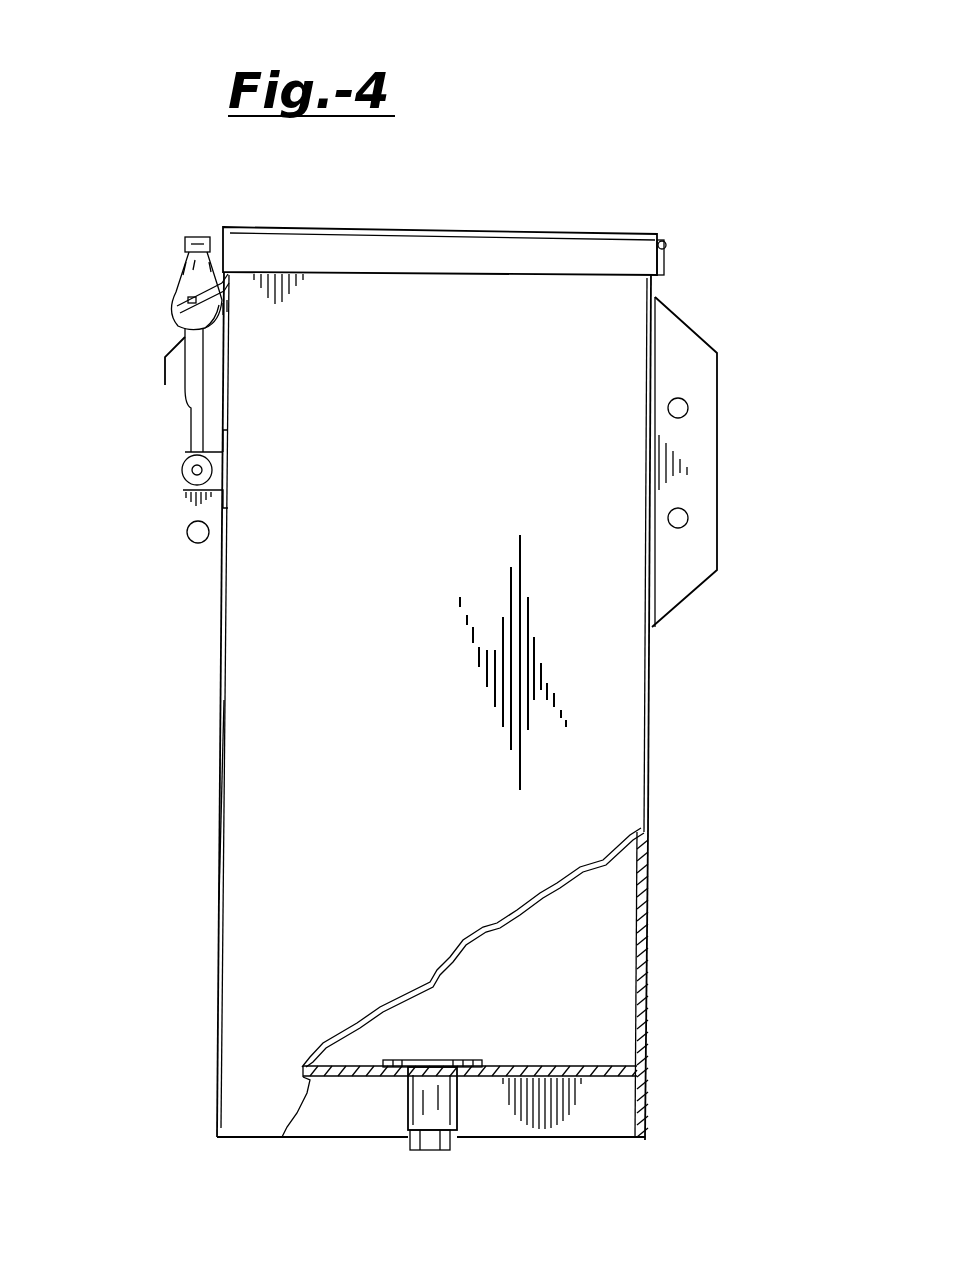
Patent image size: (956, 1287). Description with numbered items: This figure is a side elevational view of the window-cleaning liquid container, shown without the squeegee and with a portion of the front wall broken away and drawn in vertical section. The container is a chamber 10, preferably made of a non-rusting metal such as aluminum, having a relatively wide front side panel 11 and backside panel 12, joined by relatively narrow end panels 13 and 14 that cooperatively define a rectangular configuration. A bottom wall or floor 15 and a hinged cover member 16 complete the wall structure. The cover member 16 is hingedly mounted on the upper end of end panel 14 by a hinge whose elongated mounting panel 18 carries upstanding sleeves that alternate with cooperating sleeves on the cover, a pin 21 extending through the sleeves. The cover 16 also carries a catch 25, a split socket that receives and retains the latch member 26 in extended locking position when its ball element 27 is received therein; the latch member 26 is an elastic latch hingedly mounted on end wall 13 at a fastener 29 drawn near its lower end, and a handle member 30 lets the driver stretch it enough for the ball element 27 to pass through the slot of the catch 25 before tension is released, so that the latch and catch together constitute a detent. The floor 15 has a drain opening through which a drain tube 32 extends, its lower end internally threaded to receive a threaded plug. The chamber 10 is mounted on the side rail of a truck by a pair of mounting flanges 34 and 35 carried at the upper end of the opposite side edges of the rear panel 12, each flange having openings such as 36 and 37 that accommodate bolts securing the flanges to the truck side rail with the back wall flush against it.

The chamber 10 is at (537, 200).
The front side panel 11 is at (445, 860).
The backside panel 12 is at (500, 985).
The end panel 13 is at (222, 790).
The end panel 14 is at (652, 770).
The bottom wall or floor 15 is at (537, 1066).
The hinged cover member 16 is at (450, 228).
The mounting panel 18 is at (665, 270).
The pin 21 is at (667, 241).
The catch 25 is at (212, 312).
The latch member 26 is at (160, 392).
The ball element 27 is at (178, 292).
The fastener 29 is at (196, 470).
The handle member 30 is at (193, 237).
The drain tube 32 is at (396, 1060).
The mounting flange 34 is at (195, 595).
The mounting flange 35 is at (685, 595).
The opening 36 is at (688, 520).
The opening 37 is at (688, 410).